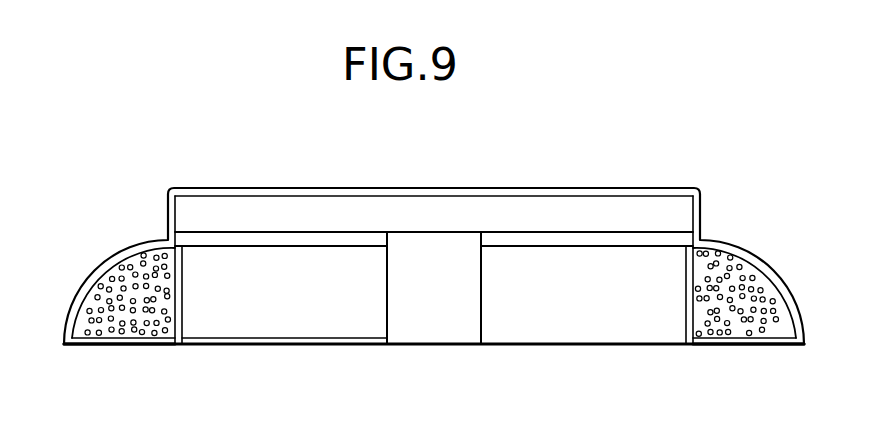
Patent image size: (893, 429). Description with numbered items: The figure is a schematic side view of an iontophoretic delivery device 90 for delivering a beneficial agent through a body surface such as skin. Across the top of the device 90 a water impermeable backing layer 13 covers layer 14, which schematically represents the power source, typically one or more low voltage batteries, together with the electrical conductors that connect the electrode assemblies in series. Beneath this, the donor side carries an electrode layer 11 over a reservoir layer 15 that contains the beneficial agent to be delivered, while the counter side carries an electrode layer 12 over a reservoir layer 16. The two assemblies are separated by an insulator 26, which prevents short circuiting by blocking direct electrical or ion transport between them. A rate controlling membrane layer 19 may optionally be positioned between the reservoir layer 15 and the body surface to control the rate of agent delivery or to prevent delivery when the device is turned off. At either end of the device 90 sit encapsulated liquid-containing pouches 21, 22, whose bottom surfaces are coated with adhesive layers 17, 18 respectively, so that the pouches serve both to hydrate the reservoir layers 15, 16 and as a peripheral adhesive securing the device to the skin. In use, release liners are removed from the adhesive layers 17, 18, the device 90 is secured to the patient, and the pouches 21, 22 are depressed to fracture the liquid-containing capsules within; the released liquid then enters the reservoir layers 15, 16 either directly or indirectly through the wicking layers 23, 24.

The iontophoretic delivery device 90 is at (540, 175).
The water impermeable backing layer 13 is at (431, 188).
The electrode layer 11 is at (202, 243).
The layer 14 is at (682, 212).
The electrode layer 12 is at (665, 242).
The insulator 26 is at (438, 325).
The reservoir layer 15 is at (311, 318).
The reservoir layer 16 is at (643, 325).
The wicking layer 23 is at (177, 305).
The wicking layer 24 is at (693, 307).
The rate controlling membrane layer 19 is at (234, 344).
The encapsulated liquid-containing pouch 21 is at (122, 268).
The encapsulated liquid-containing pouch 22 is at (760, 270).
The adhesive layer 17 is at (105, 344).
The adhesive layer 18 is at (755, 344).